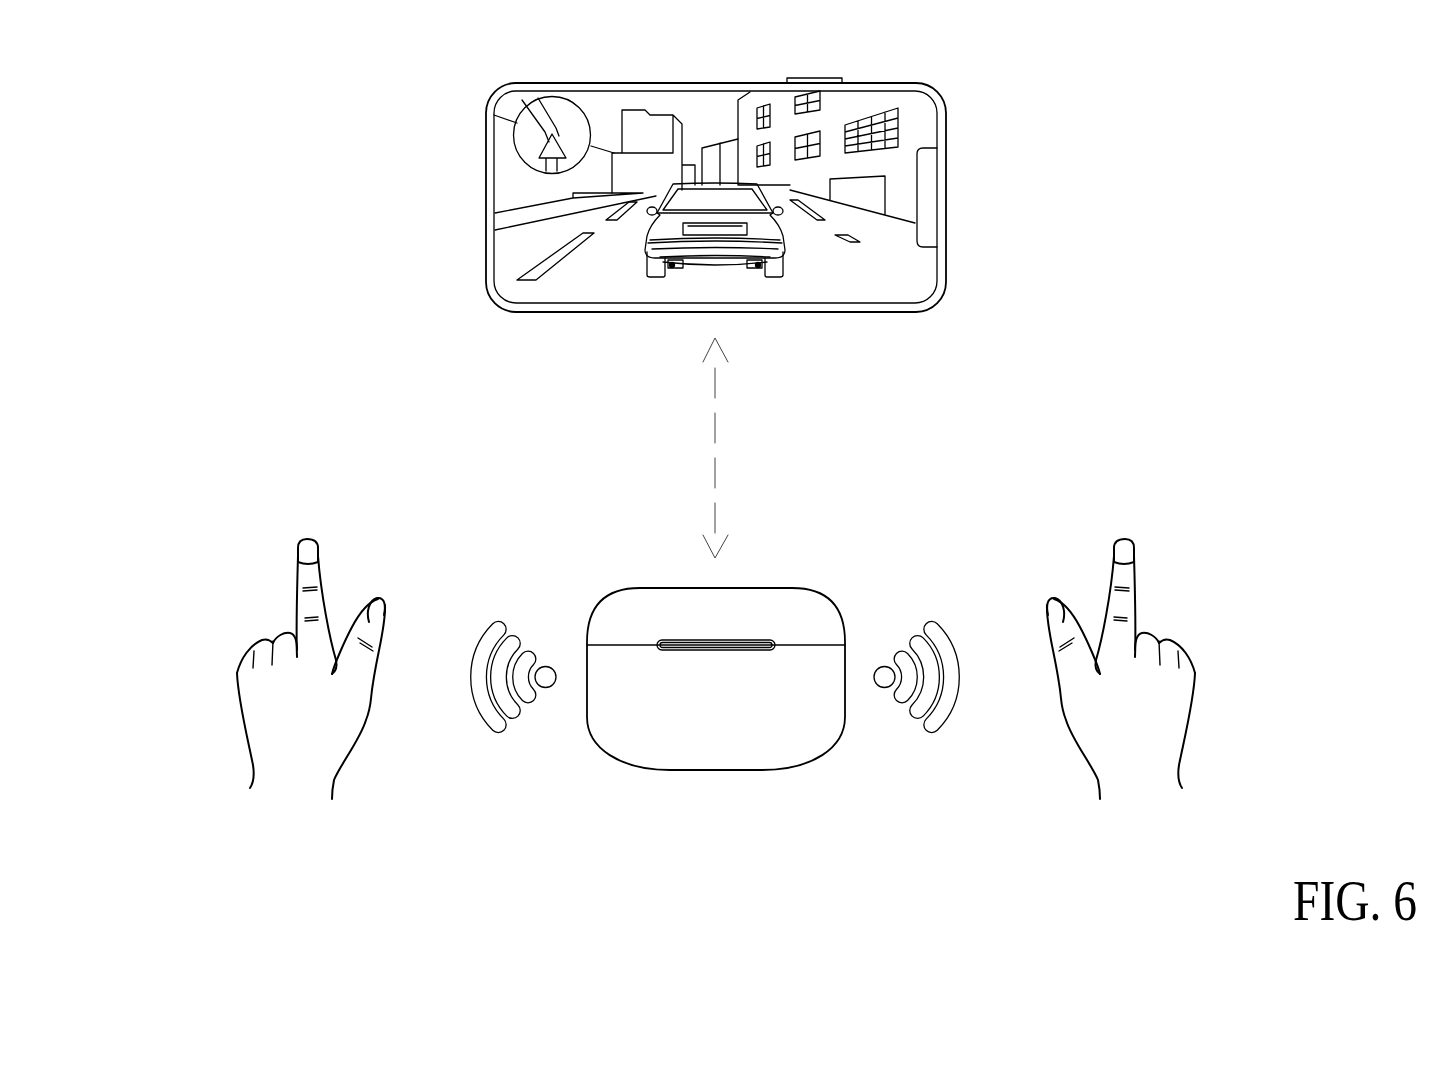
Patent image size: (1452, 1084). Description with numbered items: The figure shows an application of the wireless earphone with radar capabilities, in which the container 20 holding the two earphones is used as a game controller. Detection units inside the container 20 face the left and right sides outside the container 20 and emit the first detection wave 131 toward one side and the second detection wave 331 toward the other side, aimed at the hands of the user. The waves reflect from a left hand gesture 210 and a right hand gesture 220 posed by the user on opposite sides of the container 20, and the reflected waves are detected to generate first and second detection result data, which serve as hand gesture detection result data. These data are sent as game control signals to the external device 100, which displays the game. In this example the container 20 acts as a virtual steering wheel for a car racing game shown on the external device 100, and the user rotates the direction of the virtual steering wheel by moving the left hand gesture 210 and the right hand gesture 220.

The external device 100 is at (947, 200).
The container 20 is at (634, 610).
The first detection wave 131 is at (497, 622).
The second detection wave 331 is at (933, 622).
The left hand gesture 210 is at (274, 720).
The right hand gesture 220 is at (1158, 720).